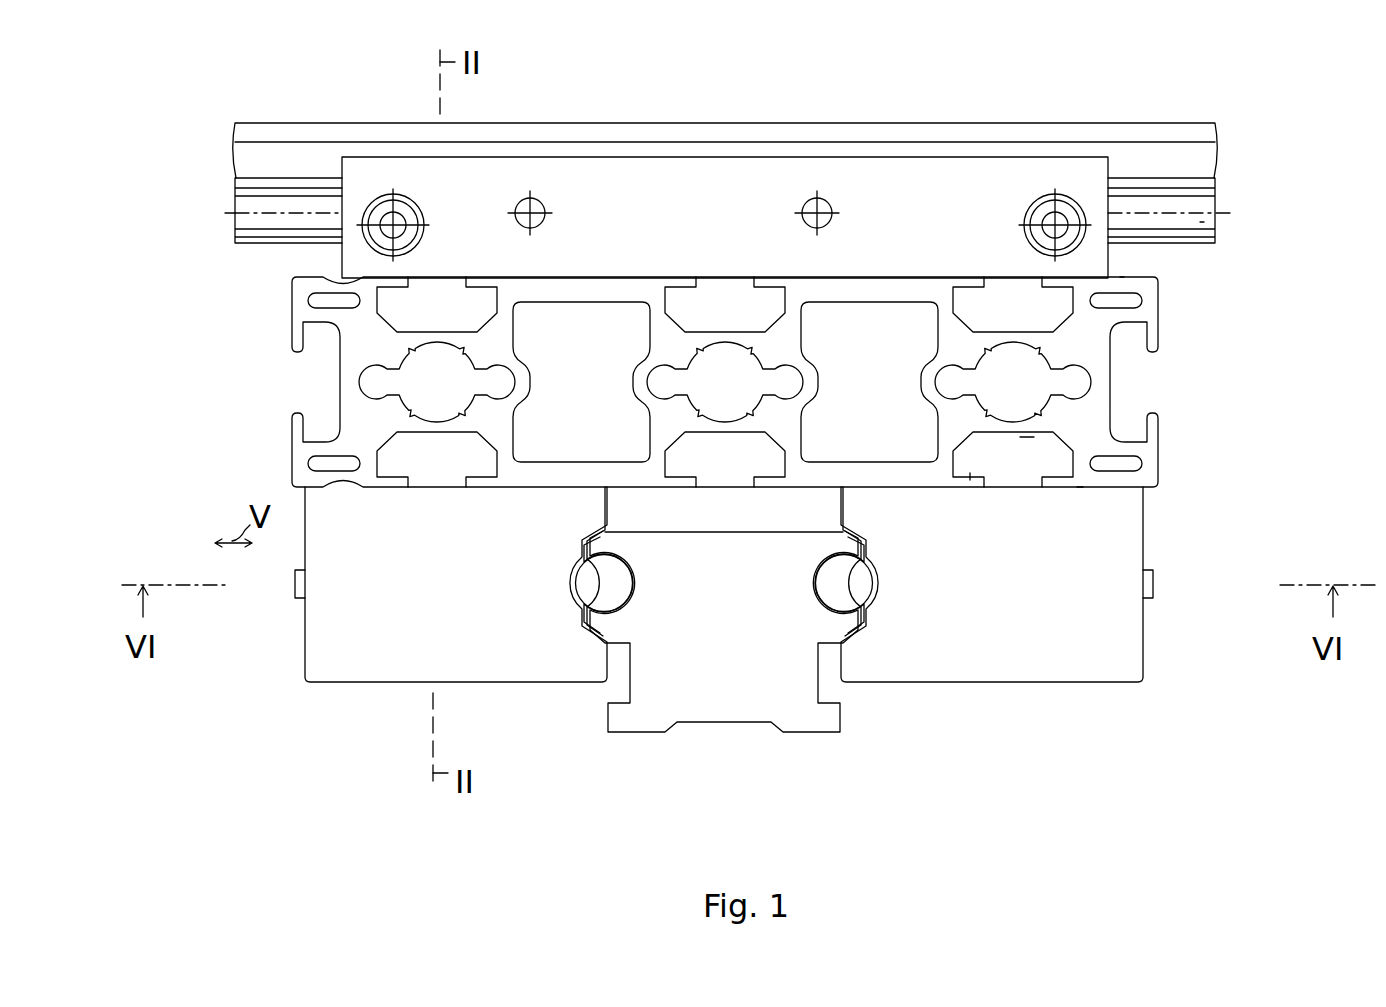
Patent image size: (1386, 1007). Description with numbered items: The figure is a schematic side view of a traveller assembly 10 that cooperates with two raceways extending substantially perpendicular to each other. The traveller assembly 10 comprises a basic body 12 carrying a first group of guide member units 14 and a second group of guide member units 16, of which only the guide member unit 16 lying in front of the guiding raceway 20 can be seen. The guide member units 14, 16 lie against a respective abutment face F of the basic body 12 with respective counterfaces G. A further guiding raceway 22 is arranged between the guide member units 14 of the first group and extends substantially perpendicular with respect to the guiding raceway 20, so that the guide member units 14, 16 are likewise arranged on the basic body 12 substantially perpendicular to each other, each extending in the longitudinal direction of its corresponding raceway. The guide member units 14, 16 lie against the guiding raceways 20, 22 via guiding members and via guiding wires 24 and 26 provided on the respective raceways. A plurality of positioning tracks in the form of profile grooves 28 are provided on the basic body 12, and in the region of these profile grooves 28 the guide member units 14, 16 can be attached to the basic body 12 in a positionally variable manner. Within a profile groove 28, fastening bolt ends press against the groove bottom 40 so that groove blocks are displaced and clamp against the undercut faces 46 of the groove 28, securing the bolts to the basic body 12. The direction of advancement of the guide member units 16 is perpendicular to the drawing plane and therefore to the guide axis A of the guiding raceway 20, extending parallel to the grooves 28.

The traveller assembly 10 is at (224, 435).
The basic body 12 is at (1160, 480).
The guide member units 14 is at (378, 686).
The guide member unit 16 is at (1040, 157).
The guiding raceway 20 is at (1155, 123).
The further guiding raceway 22 is at (810, 732).
The guiding wires 24 is at (1203, 221).
The guiding wires 26 is at (596, 594).
The profile grooves 28 is at (737, 330).
The groove bottom 40 is at (1027, 437).
The undercut faces 46 is at (970, 473).
The guide axis A is at (235, 213).
The abutment face F is at (1120, 277).
The counterface G is at (323, 278).